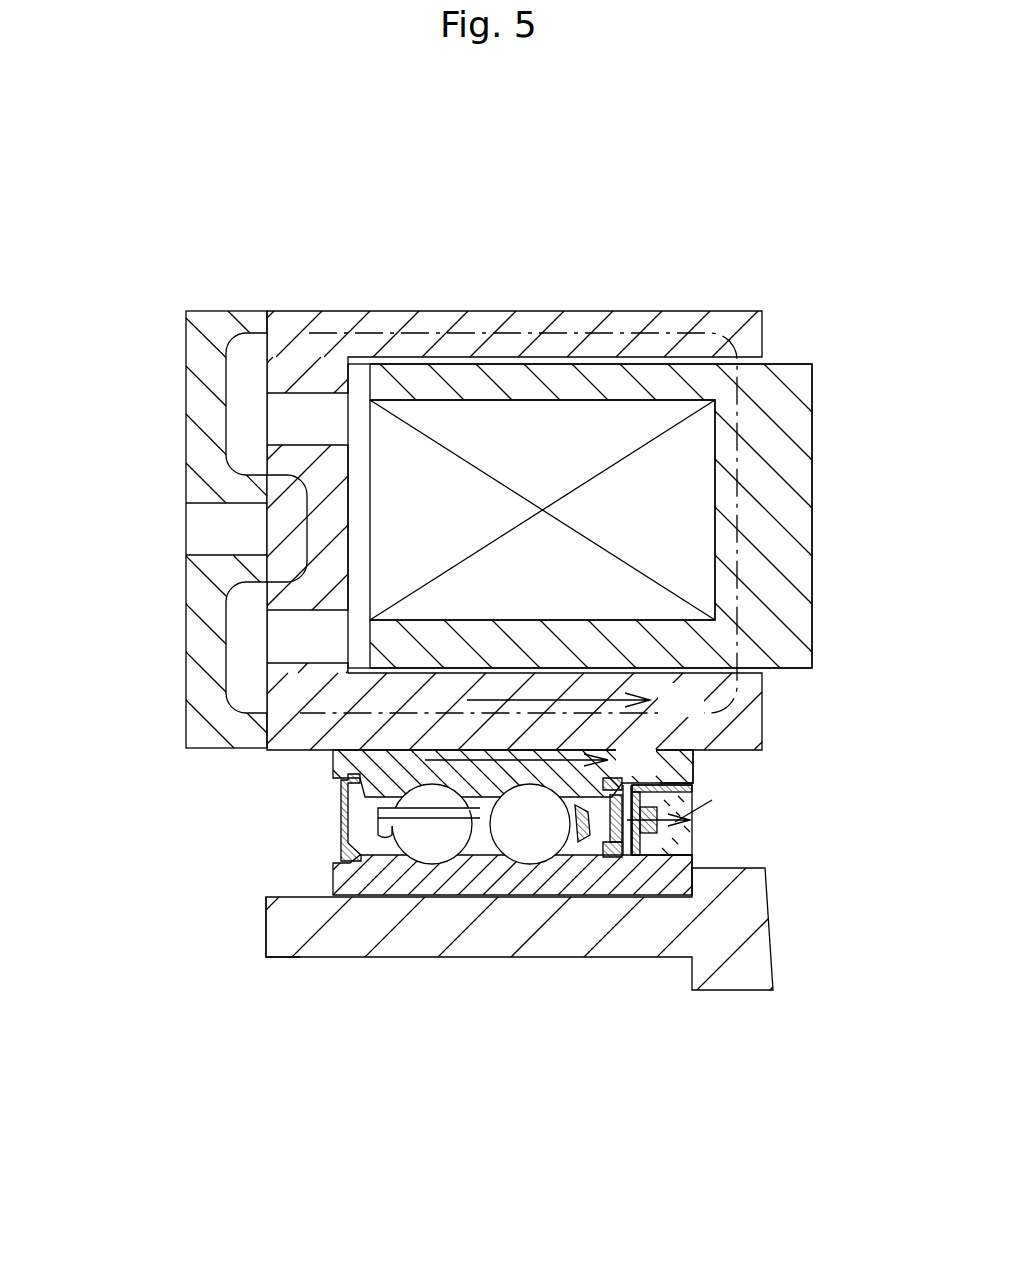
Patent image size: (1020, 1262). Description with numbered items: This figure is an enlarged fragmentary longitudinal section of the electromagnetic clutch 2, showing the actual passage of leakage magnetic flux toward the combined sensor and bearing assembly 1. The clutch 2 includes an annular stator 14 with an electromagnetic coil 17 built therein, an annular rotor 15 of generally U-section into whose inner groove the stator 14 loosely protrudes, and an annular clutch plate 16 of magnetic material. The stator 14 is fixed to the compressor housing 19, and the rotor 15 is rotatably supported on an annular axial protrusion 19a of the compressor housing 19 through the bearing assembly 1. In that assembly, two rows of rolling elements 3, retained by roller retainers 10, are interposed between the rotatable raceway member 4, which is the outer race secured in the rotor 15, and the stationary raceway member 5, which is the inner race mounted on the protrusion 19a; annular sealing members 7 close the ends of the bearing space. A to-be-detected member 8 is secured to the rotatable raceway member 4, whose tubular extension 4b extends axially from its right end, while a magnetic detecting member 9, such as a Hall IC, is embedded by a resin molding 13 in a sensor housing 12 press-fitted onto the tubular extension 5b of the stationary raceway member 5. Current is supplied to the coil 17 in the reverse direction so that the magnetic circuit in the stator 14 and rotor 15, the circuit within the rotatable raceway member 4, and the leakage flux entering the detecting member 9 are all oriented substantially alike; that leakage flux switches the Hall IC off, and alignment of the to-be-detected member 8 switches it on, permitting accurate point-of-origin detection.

The combined sensor and bearing assembly 1 is at (463, 873).
The electromagnetic clutch 2 is at (492, 455).
The rolling elements 3 is at (432, 858).
The rotatable raceway member 4 is at (483, 743).
The tubular extension 4b is at (690, 753).
The stationary raceway member 5 is at (502, 868).
The tubular extension 5b is at (692, 887).
The annular sealing members 7 is at (335, 835).
The to-be-detected member 8 is at (626, 845).
The magnetic detecting member 9 is at (657, 818).
The roller retainers 10 is at (335, 808).
The sensor housing 12 is at (640, 790).
The resin molding 13 is at (693, 820).
The stator 14 is at (800, 390).
The rotor 15 is at (625, 313).
The clutch plate 16 is at (197, 386).
The electromagnetic coil 17 is at (680, 475).
The compressor housing 19 is at (572, 966).
The annular axial protrusion 19a is at (342, 933).